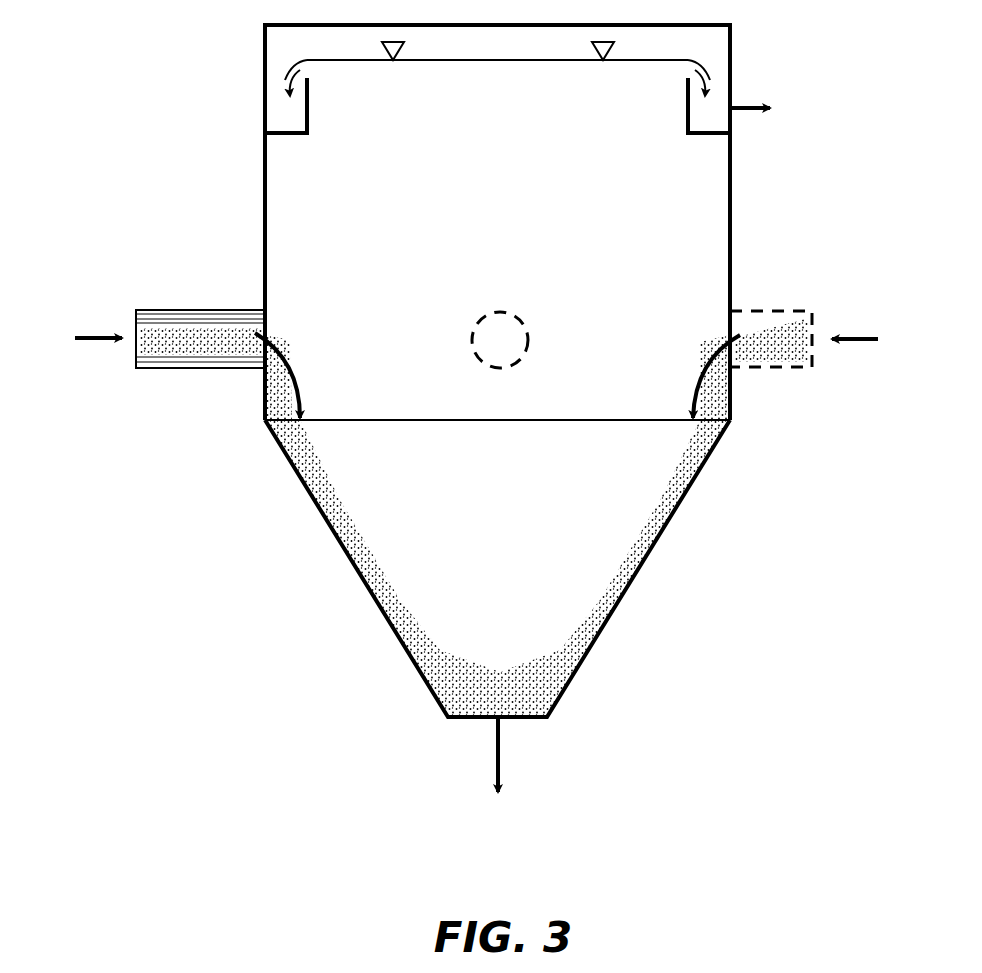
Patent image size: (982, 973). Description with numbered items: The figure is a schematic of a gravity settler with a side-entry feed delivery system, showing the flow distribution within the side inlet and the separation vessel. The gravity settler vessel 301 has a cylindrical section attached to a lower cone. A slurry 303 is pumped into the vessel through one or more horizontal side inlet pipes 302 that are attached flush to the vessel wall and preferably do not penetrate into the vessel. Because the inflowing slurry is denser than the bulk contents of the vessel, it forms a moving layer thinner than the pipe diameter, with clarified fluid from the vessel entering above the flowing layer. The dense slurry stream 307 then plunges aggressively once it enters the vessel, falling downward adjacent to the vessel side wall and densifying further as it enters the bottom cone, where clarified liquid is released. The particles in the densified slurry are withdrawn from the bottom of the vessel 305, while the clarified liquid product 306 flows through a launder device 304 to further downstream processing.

The gravity settler vessel 301 is at (733, 205).
The horizontal side inlet pipe 302 is at (230, 310).
The slurry 303 is at (185, 335).
The launder device 304 is at (278, 100).
The bottom of the vessel 305 is at (500, 752).
The clarified liquid product 306 is at (700, 70).
The dense slurry stream 307 is at (606, 613).